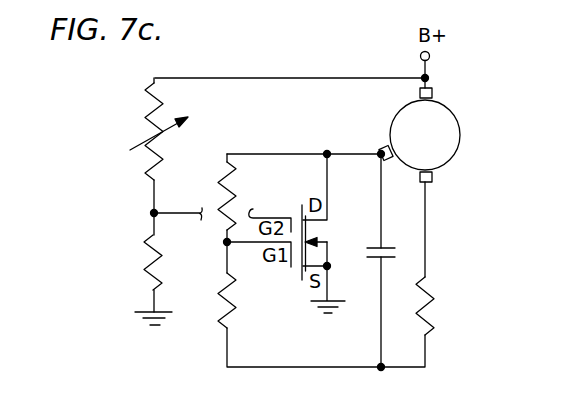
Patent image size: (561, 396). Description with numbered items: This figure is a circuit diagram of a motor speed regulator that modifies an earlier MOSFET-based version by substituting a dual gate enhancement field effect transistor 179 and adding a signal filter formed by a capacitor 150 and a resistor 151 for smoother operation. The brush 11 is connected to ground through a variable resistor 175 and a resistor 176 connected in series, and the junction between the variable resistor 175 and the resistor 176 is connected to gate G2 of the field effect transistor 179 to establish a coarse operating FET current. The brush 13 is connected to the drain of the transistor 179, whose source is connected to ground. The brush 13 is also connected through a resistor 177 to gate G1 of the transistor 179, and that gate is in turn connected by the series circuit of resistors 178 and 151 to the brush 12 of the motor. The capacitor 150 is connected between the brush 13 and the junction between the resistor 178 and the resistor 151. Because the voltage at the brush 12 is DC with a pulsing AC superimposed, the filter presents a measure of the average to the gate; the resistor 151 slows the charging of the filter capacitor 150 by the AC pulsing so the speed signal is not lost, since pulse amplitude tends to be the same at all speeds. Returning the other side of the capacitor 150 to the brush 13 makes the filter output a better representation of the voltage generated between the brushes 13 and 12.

The brush 11 is at (418, 94).
The brush 12 is at (432, 174).
The brush 13 is at (384, 148).
The capacitor 150 is at (372, 246).
The resistor 151 is at (432, 296).
The variable resistor 175 is at (148, 128).
The resistor 176 is at (150, 260).
The resistor 177 is at (237, 182).
The resistor 178 is at (233, 310).
The dual gate enhancement field effect transistor 179 is at (323, 234).